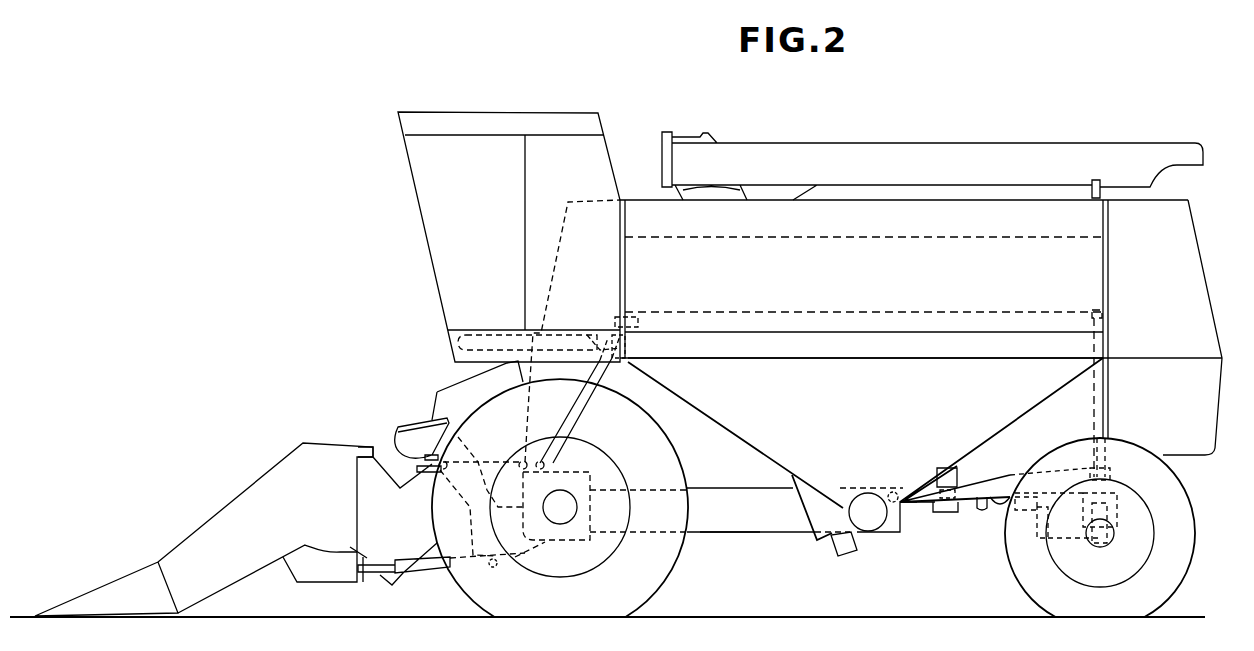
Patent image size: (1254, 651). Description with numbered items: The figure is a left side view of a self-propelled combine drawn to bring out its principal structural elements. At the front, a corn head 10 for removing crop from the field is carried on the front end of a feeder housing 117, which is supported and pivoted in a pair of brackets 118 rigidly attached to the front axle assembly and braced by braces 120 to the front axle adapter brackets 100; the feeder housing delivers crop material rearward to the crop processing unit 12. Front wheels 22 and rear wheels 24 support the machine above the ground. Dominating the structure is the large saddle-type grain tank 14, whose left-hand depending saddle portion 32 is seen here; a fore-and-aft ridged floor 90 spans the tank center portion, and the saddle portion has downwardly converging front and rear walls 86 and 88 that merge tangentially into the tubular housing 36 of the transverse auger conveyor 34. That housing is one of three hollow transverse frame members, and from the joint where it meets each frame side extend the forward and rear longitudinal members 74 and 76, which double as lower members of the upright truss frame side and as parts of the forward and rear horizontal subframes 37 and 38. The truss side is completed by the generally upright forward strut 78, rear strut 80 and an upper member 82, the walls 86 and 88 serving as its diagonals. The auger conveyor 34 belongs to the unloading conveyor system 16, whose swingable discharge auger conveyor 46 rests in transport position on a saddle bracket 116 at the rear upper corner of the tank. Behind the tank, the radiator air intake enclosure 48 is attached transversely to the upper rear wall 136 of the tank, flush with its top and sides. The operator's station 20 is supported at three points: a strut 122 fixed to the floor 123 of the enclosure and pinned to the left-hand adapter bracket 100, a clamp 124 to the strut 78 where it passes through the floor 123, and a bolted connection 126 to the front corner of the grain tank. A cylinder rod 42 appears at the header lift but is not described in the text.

The corn head 10 is at (247, 488).
The crop processing unit 12 is at (445, 395).
The grain tank 14 is at (896, 198).
The unloading conveyor system 16 is at (760, 133).
The operator's station 20 is at (425, 218).
The front wheels 22 is at (667, 574).
The rear wheels 24 is at (1183, 574).
The left-hand saddle portion 32 is at (876, 393).
The transverse auger conveyor 34 is at (888, 537).
The tubular housing 36 is at (852, 491).
The forward horizontal subframe 37 is at (733, 537).
The rear horizontal subframe 38 is at (918, 510).
The header lift cylinder rod 42 is at (417, 570).
The swingable discharge auger conveyor 46 is at (1073, 141).
The enclosure 48 is at (1216, 288).
The forward longitudinal member 74 is at (775, 535).
The rear longitudinal member 76 is at (980, 500).
The forward strut 78 is at (600, 372).
The rear strut 80 is at (1106, 400).
The upper member 82 is at (820, 311).
The front wall 86 is at (720, 428).
The rear wall 88 is at (1010, 420).
The ridged floor 90 is at (948, 240).
The adapter brackets 100 is at (530, 547).
The saddle bracket 116 is at (1102, 186).
The feeder housing 117 is at (376, 460).
The brackets 118 is at (468, 421).
The braces 120 is at (484, 466).
The strut 122 is at (523, 412).
The floor 123 is at (456, 356).
The clamp 124 is at (594, 340).
The bolted connection 126 is at (640, 365).
The upper rear wall 136 is at (1108, 262).